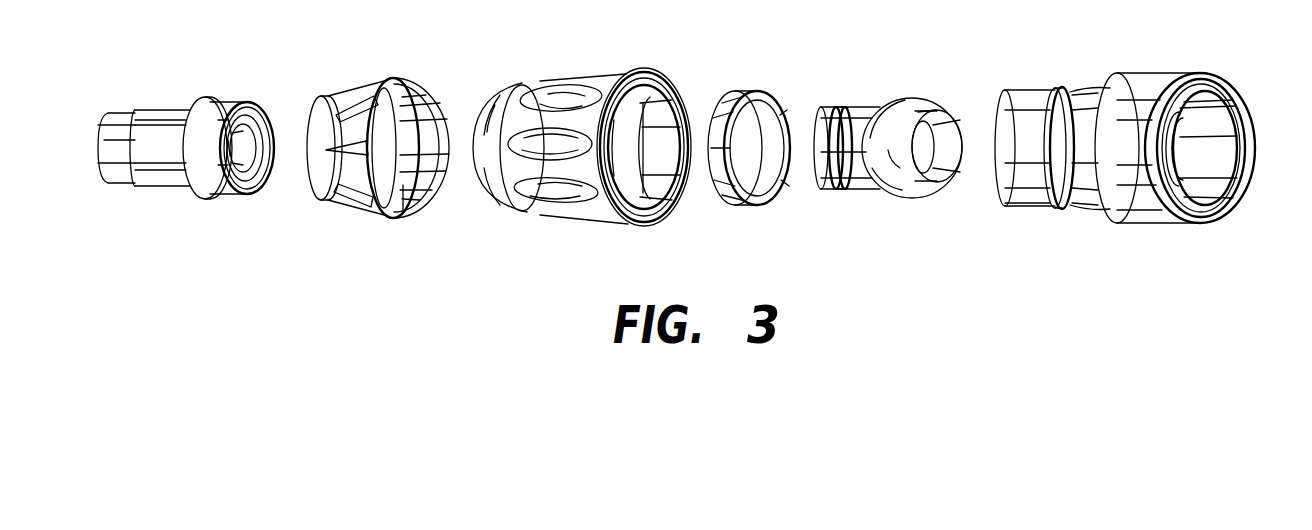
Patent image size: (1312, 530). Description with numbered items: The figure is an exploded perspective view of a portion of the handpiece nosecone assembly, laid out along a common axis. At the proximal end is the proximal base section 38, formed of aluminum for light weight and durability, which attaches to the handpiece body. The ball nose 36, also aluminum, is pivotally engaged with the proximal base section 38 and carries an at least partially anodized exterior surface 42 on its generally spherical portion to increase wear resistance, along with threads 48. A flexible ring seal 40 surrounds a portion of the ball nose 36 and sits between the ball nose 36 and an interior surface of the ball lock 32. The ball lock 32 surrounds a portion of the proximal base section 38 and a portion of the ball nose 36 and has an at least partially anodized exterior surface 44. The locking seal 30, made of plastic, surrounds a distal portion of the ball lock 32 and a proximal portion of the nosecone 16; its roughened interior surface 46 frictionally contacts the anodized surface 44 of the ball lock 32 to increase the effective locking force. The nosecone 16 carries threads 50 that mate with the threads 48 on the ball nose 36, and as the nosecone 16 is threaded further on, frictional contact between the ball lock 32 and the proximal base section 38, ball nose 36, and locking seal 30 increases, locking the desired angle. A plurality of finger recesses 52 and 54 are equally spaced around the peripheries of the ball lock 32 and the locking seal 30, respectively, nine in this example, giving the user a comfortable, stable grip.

The nosecone 16 is at (179, 122).
The threads 50 is at (266, 130).
The locking seal 30 is at (389, 143).
The finger recesses 54 is at (352, 190).
The roughened interior surface 46 is at (412, 196).
The ball lock 32 is at (540, 139).
The anodized exterior surface 44 is at (495, 105).
The finger recesses 52 is at (590, 90).
The flexible ring seal 40 is at (736, 92).
The ball nose 36 is at (893, 151).
The threads 48 is at (848, 192).
The anodized exterior surface 42 is at (912, 108).
The proximal base section 38 is at (1145, 72).